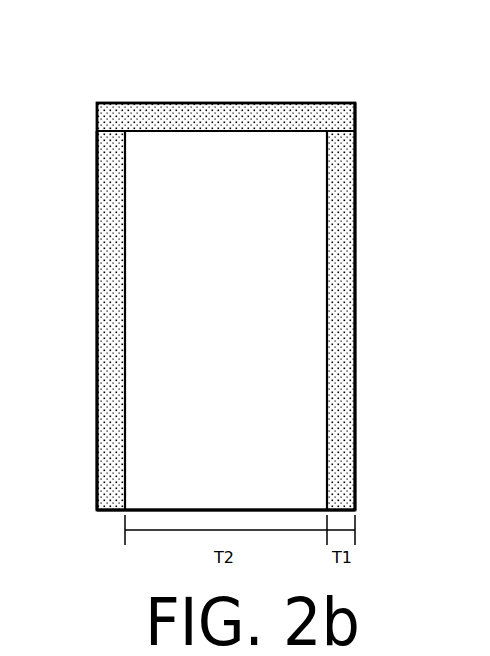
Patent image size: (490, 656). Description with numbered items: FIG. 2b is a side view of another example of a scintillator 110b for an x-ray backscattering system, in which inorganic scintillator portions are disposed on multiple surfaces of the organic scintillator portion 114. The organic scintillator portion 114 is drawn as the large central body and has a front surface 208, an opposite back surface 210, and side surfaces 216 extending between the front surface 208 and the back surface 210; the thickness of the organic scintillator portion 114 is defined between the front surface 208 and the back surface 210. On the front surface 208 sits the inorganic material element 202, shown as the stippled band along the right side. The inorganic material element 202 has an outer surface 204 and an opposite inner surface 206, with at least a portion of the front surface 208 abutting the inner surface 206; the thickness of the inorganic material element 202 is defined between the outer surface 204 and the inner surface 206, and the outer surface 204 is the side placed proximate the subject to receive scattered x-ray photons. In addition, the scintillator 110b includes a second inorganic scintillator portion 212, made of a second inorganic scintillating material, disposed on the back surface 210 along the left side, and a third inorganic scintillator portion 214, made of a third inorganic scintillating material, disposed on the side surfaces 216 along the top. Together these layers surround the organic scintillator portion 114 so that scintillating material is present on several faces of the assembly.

The scintillator 110b is at (232, 67).
The organic scintillator portion 114 is at (125, 185).
The inorganic material element 202 is at (342, 197).
The outer surface 204 is at (356, 302).
The inner surface 206 is at (326, 305).
The front surface 208 is at (328, 357).
The back surface 210 is at (125, 408).
The second inorganic scintillator portion 212 is at (113, 350).
The third inorganic scintillator portion 214 is at (327, 113).
The side surfaces 216 is at (229, 130).